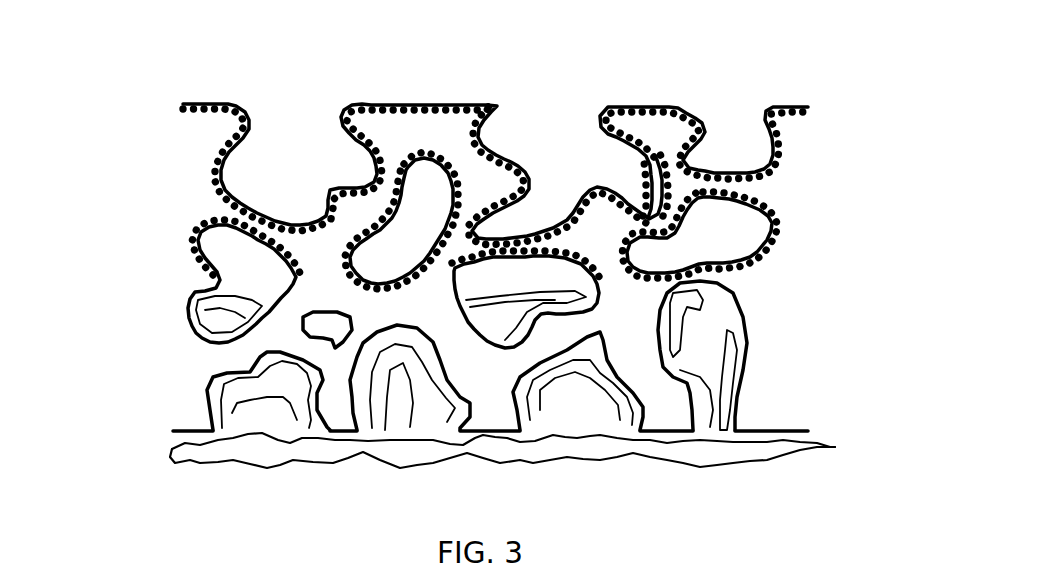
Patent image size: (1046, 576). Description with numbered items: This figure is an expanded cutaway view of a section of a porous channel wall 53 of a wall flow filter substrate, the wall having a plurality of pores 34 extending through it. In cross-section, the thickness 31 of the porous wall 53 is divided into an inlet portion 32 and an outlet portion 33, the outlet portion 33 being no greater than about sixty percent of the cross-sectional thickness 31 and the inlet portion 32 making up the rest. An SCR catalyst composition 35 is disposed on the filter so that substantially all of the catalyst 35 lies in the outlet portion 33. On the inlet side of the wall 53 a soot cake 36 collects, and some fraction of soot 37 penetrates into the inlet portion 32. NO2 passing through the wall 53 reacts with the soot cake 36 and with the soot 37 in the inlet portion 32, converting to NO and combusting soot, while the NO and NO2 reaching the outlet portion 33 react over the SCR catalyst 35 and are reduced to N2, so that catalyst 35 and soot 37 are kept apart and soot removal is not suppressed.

The cross-sectional thickness 31 is at (130, 105).
The inlet portion 32 is at (833, 282).
The outlet portion 33 is at (833, 105).
The pores 34 is at (557, 114).
The SCR catalyst composition 35 is at (697, 127).
The soot cake 36 is at (322, 456).
The soot 37 is at (562, 375).
The porous channel wall 53 is at (180, 102).